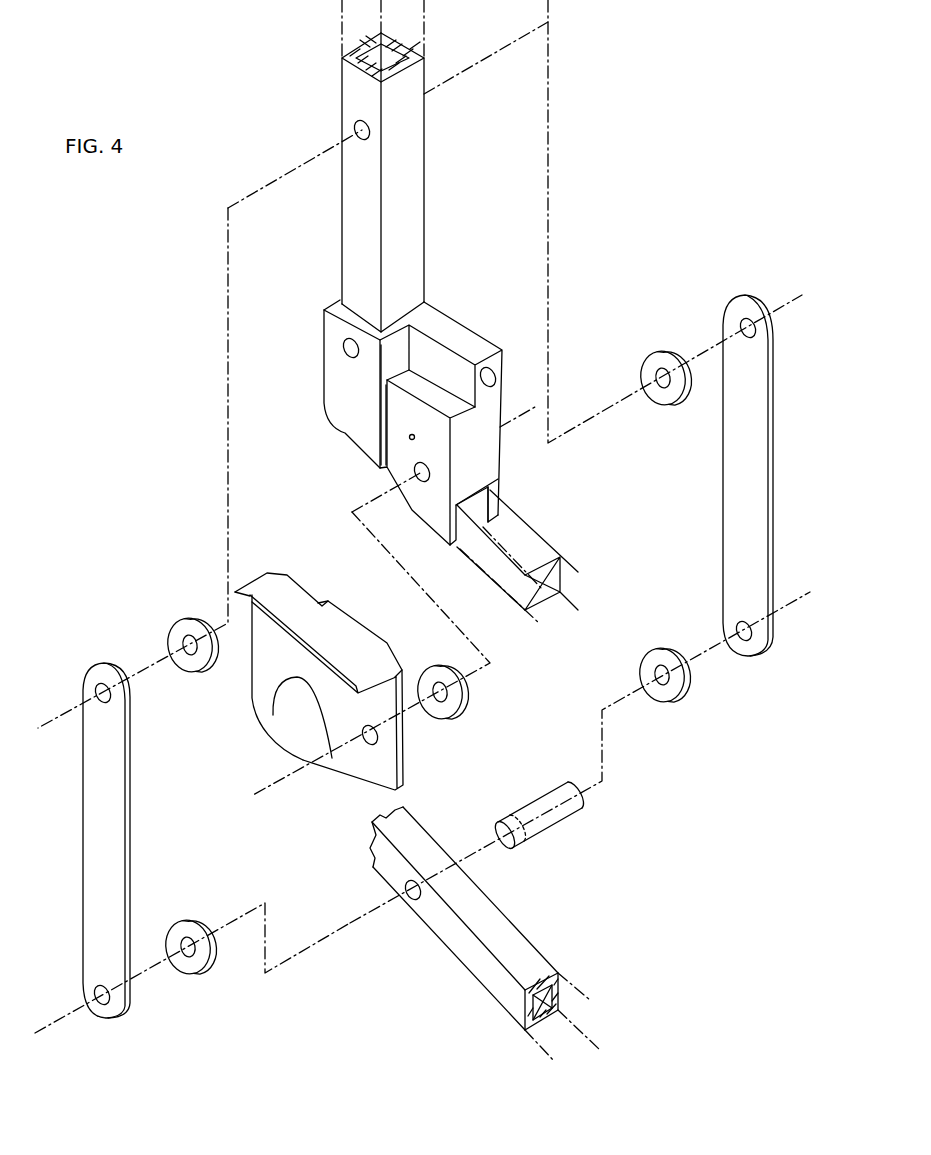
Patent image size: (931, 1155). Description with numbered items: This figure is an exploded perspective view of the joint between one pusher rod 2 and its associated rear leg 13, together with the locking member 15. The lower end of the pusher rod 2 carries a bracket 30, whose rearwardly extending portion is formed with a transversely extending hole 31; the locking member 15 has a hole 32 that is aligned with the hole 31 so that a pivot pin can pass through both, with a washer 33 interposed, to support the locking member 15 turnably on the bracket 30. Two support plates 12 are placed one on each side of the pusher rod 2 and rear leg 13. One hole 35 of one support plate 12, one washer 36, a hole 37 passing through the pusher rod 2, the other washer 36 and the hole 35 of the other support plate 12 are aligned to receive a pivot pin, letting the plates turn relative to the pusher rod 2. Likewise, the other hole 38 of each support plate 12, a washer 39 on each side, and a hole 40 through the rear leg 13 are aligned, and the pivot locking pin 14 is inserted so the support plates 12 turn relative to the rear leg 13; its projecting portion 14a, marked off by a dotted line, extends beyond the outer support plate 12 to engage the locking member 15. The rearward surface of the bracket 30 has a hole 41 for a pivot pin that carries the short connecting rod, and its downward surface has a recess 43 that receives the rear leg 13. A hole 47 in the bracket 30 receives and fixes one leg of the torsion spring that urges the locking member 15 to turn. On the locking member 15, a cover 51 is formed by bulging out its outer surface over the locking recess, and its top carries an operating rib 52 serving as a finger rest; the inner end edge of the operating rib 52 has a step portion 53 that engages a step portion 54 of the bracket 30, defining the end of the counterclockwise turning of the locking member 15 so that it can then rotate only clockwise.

The pusher rod 2 is at (356, 128).
The hole 37 is at (361, 130).
The bracket 30 is at (450, 313).
The hole 41 is at (497, 377).
The step portion 54 is at (383, 413).
The hole 47 is at (409, 438).
The hole 31 is at (416, 474).
The recess 43 is at (488, 498).
The rear leg 13 is at (533, 540).
The hole 40 is at (410, 898).
The pivot locking pin 14 is at (533, 826).
The projecting portion 14a is at (513, 823).
The locking member 15 is at (313, 665).
The operating rib 52 is at (307, 633).
The step portion 53 is at (325, 602).
The cover 51 is at (292, 737).
The hole 32 is at (378, 741).
The washer 33 is at (455, 710).
The washer 36 is at (645, 355).
The washer 39 is at (672, 698).
The support plate 12 is at (735, 482).
The hole 35 is at (742, 318).
The hole 38 is at (743, 642).